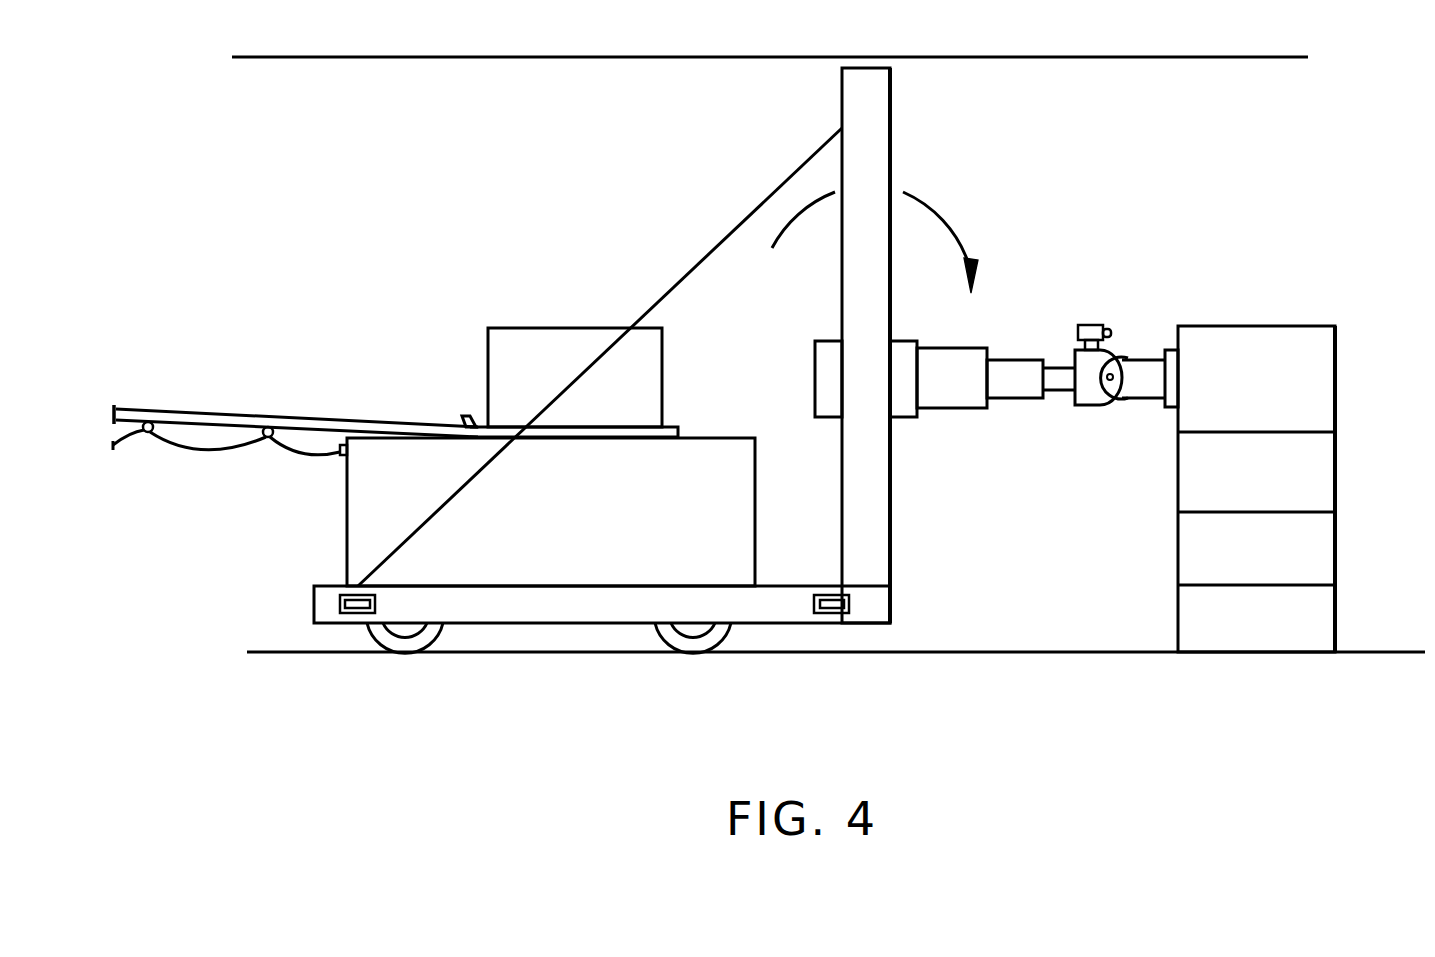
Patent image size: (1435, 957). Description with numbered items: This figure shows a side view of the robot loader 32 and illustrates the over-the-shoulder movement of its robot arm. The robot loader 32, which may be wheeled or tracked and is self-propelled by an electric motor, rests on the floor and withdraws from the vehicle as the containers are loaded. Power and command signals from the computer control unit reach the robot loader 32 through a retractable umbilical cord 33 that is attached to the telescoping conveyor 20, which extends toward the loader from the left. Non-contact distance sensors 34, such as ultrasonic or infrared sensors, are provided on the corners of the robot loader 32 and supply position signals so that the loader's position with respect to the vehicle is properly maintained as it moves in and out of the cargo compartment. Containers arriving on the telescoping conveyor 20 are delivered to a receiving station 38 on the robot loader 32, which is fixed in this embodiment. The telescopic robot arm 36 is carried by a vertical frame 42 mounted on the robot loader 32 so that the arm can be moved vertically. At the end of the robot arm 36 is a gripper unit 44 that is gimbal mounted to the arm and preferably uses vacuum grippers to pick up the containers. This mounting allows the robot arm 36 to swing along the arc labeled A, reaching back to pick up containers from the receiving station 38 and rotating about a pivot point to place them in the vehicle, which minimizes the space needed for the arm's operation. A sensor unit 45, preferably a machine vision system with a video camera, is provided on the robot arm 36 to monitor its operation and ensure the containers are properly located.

The telescoping conveyor 20 is at (180, 421).
The robot loader 32 is at (540, 523).
The umbilical cord 33 is at (305, 453).
The non-contact distance sensors 34 is at (355, 613).
The telescopic robot arm 36 is at (961, 405).
The receiving station 38 is at (463, 418).
The vertical frame 42 is at (882, 523).
The gripper unit 44 is at (1093, 405).
The sensor unit 45 is at (1093, 325).